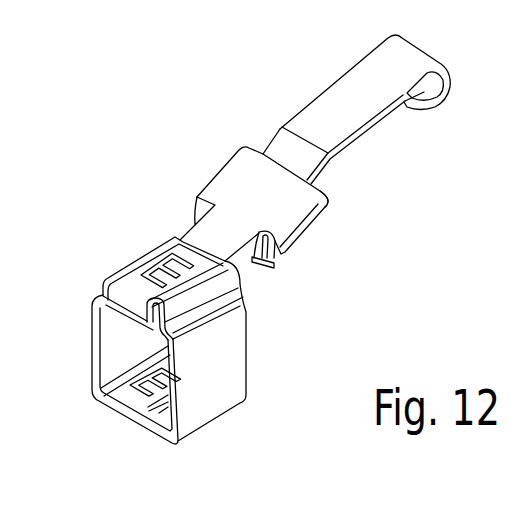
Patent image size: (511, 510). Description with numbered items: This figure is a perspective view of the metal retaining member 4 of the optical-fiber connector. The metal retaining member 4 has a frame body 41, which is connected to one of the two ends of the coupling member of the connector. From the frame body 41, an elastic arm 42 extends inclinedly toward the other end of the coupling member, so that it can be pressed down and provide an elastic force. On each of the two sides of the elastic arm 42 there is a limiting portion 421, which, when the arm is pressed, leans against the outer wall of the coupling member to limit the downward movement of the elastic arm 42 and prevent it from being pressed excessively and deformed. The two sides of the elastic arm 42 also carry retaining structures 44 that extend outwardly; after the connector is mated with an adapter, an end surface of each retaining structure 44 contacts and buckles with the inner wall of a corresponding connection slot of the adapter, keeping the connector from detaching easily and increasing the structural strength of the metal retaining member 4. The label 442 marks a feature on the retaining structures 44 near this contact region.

The metal retaining member 4 is at (235, 185).
The frame body 41 is at (228, 366).
The elastic arm 42 is at (339, 93).
The limiting portion 421 is at (272, 266).
The retaining structure 44 is at (313, 208).
The rounded corner of side tab 442 is at (326, 195).